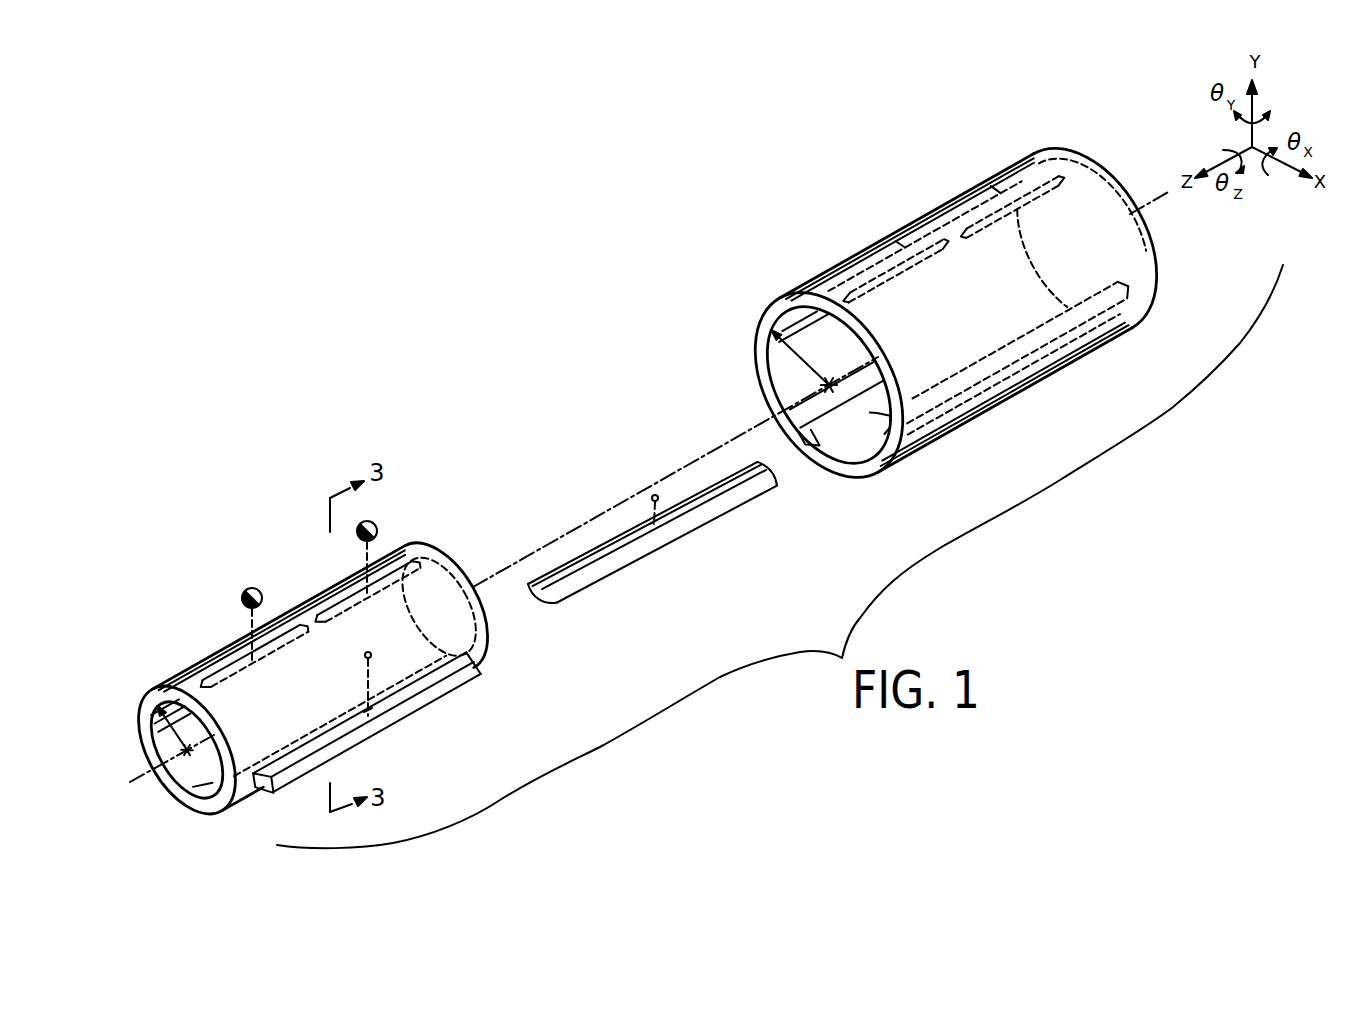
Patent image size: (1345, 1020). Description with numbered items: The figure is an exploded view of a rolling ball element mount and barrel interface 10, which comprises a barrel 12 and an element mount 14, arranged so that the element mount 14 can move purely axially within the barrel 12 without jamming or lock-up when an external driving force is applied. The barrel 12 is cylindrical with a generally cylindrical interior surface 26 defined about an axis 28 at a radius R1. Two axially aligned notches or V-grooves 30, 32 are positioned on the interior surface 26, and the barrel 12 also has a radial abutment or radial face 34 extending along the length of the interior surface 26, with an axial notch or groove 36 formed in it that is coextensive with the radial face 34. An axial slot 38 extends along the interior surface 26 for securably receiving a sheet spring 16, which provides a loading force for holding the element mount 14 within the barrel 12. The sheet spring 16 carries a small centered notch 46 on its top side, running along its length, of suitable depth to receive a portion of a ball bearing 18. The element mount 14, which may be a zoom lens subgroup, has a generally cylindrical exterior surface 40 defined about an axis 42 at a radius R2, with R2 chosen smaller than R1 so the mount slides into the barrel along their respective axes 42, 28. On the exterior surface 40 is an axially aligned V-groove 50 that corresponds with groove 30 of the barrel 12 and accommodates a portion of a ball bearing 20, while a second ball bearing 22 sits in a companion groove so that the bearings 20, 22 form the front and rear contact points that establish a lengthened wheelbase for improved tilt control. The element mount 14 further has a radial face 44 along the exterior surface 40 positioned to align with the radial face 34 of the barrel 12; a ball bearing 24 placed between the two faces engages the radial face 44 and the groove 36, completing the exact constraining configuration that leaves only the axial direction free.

The rolling ball element mount and barrel interface 10 is at (626, 279).
The barrel 12 is at (991, 405).
The element mount 14 is at (438, 560).
The sheet spring 16 is at (635, 553).
The ball bearing 18 is at (659, 497).
The ball bearing 20 is at (246, 590).
The ball bearing 22 is at (376, 525).
The ball bearing 24 is at (365, 655).
The interior surface 26 is at (800, 349).
The axis 28 is at (1151, 197).
The V-groove 30 is at (897, 240).
The V-groove 32 is at (993, 185).
The radial face 34 is at (872, 418).
The groove 36 is at (868, 424).
The axial slot 38 is at (820, 430).
The exterior surface 40 is at (267, 711).
The axis 42 is at (128, 777).
The radial face 44 is at (473, 658).
The notch 46 is at (575, 570).
The V-groove 50 is at (230, 667).
The radius R1 is at (763, 352).
The radius R2 is at (149, 705).